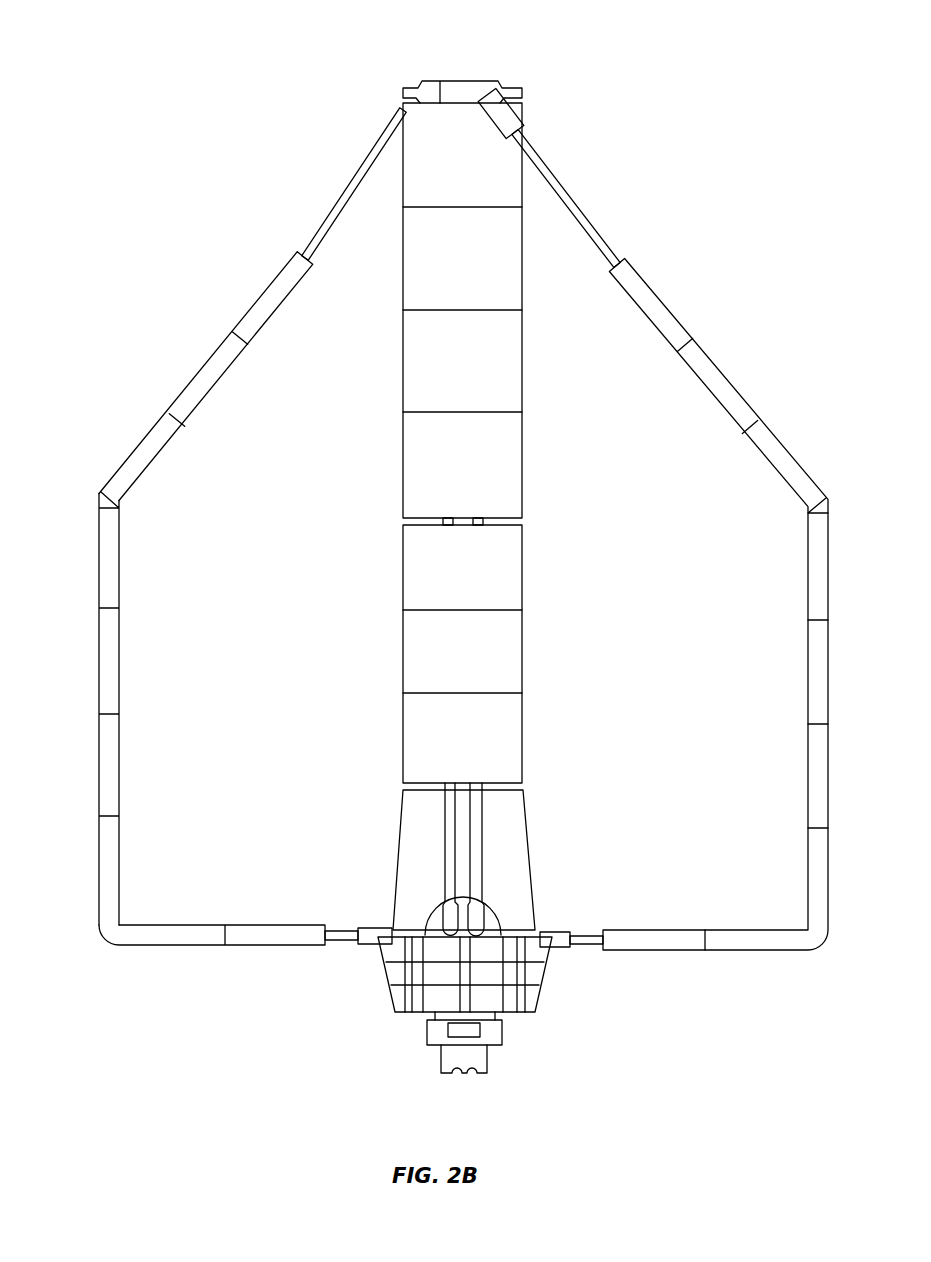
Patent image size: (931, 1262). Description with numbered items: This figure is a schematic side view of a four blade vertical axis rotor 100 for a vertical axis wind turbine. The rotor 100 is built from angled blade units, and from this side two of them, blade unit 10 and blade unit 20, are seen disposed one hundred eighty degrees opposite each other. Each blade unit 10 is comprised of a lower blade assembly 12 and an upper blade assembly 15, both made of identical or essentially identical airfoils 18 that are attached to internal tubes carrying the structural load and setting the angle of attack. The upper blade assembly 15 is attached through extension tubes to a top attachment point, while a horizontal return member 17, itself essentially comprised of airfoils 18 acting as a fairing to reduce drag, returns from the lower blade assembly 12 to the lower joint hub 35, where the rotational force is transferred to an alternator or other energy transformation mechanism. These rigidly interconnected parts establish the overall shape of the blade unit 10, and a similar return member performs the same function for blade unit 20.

The four blade vertical axis rotor 100 is at (181, 49).
The blade unit 10 is at (245, 565).
The lower blade assembly 12 is at (90, 500).
The upper blade assembly 15 is at (393, 112).
The horizontal return member 17 is at (367, 958).
The airfoils 18 is at (271, 312).
The blade unit 20 is at (682, 566).
The lower joint hub 35 is at (548, 962).